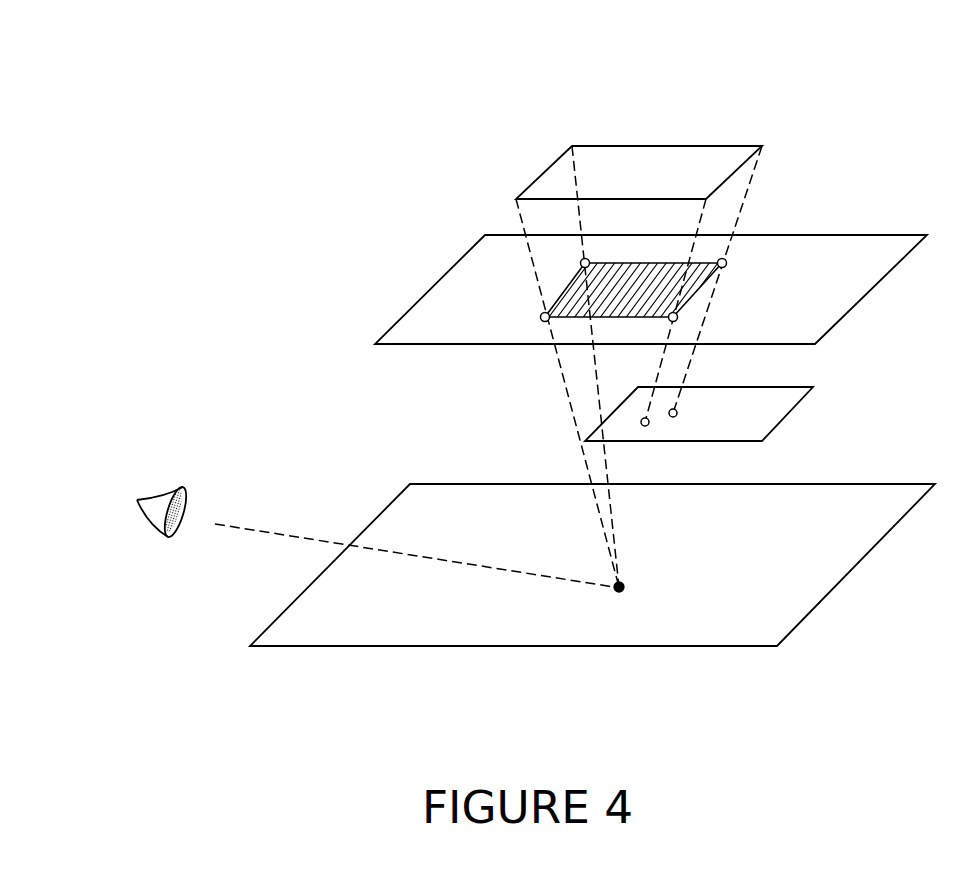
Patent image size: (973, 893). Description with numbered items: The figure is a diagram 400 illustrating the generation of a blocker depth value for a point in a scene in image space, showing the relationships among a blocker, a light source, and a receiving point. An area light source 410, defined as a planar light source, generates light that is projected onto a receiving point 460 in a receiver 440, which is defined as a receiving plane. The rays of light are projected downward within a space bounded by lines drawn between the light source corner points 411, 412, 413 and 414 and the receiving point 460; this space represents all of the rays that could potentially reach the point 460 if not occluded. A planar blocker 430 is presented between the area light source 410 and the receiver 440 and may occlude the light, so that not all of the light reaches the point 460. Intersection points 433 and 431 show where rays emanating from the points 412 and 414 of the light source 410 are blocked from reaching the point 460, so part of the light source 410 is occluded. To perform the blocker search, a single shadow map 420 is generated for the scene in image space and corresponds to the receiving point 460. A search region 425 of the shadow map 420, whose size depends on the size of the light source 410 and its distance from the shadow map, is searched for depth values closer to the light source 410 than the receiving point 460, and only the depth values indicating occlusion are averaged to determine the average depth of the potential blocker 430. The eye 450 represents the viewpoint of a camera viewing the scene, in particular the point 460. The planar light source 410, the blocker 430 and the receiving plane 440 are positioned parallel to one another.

The optical system 400 is at (85, 55).
The area light source 410 is at (664, 146).
The point of the light source 411 is at (572, 146).
The point of the light source 412 is at (762, 146).
The point of the light source 413 is at (516, 199).
The point of the light source 414 is at (720, 204).
The shadow map 420 is at (867, 297).
The search region 425 is at (708, 282).
The blocker 430 is at (792, 413).
The intersection point 431 is at (642, 428).
The intersection point 433 is at (680, 412).
The receiver 440 is at (863, 560).
The eye 450 is at (160, 498).
The receiving point 460 is at (623, 585).